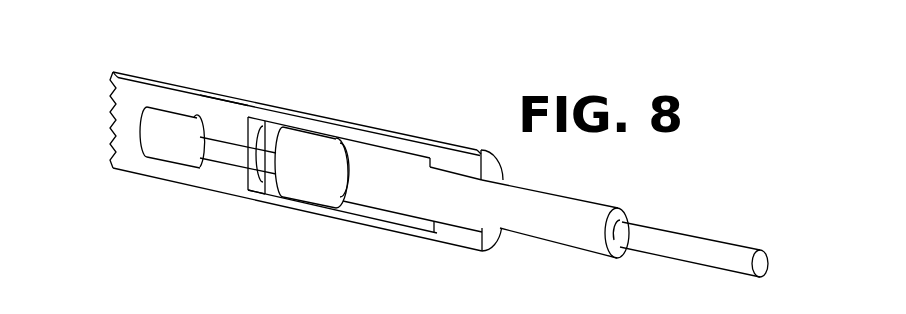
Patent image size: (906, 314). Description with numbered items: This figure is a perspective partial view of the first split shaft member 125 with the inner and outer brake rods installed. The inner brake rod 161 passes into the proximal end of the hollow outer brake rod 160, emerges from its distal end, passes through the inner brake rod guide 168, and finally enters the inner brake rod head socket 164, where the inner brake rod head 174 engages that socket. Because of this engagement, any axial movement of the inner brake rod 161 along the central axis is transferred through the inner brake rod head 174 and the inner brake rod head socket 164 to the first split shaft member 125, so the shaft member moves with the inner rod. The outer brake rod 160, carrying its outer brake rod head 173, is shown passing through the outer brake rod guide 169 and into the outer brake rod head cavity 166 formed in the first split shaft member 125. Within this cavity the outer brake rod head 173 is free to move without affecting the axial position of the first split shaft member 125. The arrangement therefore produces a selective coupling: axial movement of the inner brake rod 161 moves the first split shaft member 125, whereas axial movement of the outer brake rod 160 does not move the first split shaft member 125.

The first split shaft member 125 is at (217, 108).
The outer brake rod 160 is at (538, 227).
The inner brake rod 161 is at (237, 150).
The inner brake rod head socket 164 is at (150, 107).
The outer brake rod head cavity 166 is at (380, 148).
The inner brake rod guide 168 is at (227, 130).
The outer brake rod guide 169 is at (450, 225).
The outer brake rod head 173 is at (308, 185).
The inner brake rod head 174 is at (168, 147).